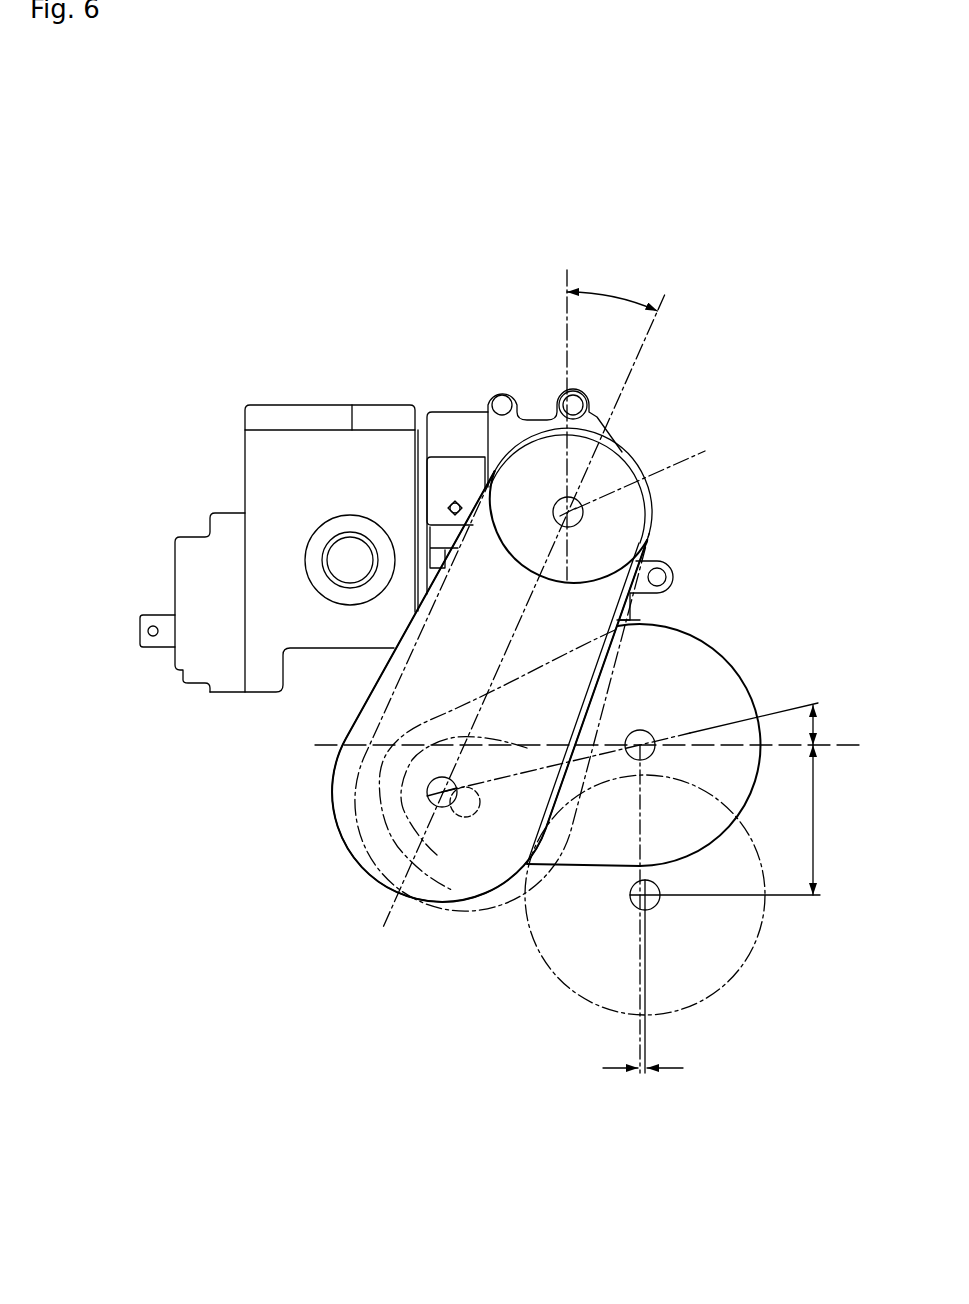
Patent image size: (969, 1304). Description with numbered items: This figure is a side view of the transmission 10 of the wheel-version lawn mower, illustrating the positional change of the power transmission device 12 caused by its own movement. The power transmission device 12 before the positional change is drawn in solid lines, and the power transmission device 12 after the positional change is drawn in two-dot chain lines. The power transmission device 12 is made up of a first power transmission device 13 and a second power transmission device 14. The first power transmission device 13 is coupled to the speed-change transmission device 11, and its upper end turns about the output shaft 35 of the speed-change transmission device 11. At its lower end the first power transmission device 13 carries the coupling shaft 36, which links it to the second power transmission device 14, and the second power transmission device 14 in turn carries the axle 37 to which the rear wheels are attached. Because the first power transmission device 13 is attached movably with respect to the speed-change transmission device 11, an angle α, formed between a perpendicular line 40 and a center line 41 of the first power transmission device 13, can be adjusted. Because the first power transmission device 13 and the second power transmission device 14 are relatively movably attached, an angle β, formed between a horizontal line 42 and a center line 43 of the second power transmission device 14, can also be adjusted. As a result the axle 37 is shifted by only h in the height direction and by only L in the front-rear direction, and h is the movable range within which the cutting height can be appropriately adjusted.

The transmission 10 is at (447, 300).
The speed-change transmission device 11 is at (303, 405).
The power transmission device 12 is at (452, 1053).
The first power transmission device 13 is at (442, 903).
The second power transmission device 14 is at (437, 808).
The output shaft 35 is at (641, 479).
The coupling shaft 36 is at (430, 804).
The axle 37 is at (651, 734).
The perpendicular line 40 is at (568, 373).
The center line of the first power transmission device 41 is at (640, 357).
The horizontal line 42 is at (783, 745).
The center line of the second power transmission device 43 is at (783, 745).